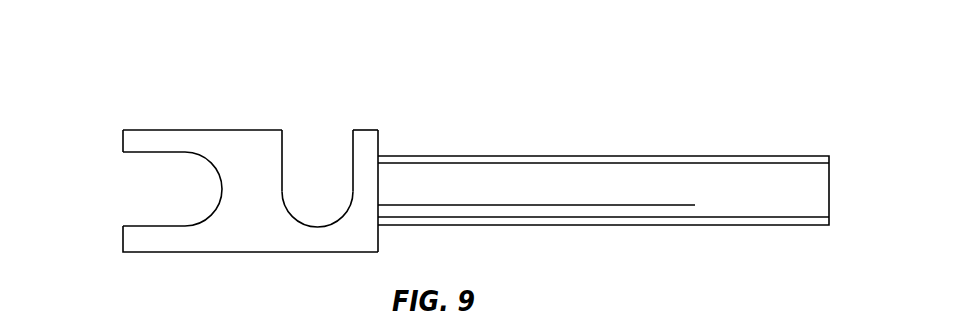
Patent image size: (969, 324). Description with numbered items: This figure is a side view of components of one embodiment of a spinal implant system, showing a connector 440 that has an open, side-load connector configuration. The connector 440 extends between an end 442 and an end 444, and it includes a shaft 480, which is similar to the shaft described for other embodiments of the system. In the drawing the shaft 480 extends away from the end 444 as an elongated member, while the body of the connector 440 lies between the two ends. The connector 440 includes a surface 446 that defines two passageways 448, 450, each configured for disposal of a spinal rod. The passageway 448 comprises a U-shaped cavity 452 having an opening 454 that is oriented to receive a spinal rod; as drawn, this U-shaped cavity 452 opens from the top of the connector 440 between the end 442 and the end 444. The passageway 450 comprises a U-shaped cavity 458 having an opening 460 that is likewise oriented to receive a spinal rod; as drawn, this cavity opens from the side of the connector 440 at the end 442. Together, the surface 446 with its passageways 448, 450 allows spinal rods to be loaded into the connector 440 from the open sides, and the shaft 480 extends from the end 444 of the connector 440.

The connector 440 is at (363, 142).
The end 442 is at (122, 146).
The end 444 is at (380, 148).
The surface 446 is at (247, 130).
The passageway 448 is at (315, 135).
The passageway 450 is at (122, 210).
The U-shaped cavity 452 is at (297, 135).
The opening 454 is at (327, 140).
The U-shaped cavity 458 is at (155, 190).
The opening 460 is at (147, 165).
The shaft 480 is at (660, 180).